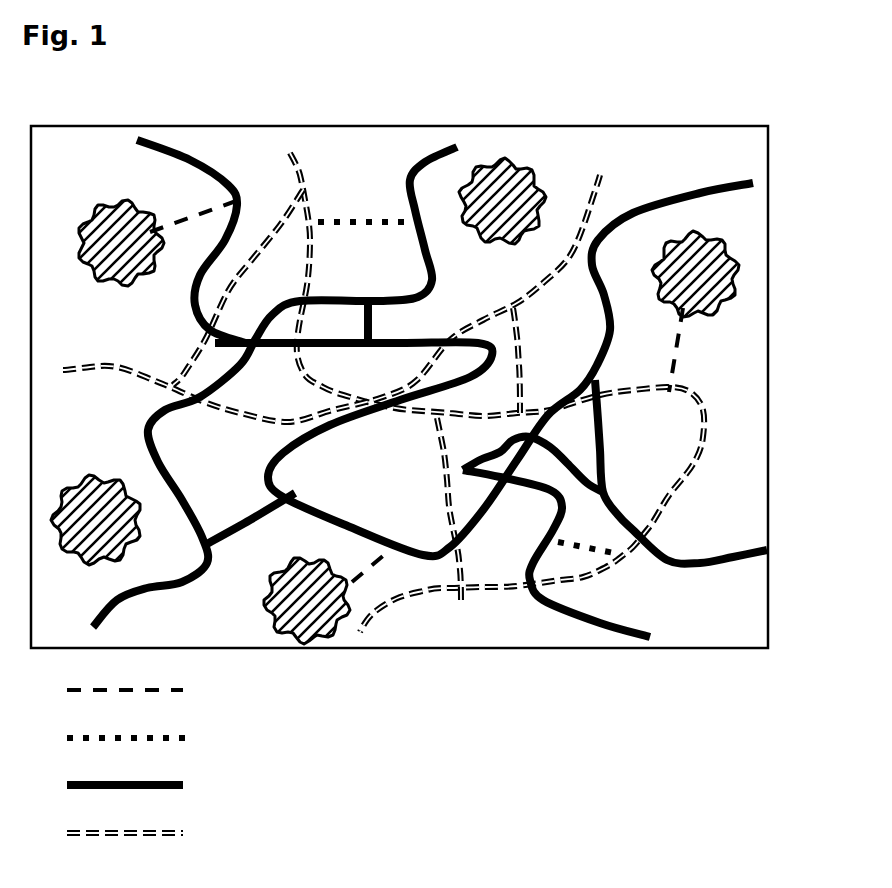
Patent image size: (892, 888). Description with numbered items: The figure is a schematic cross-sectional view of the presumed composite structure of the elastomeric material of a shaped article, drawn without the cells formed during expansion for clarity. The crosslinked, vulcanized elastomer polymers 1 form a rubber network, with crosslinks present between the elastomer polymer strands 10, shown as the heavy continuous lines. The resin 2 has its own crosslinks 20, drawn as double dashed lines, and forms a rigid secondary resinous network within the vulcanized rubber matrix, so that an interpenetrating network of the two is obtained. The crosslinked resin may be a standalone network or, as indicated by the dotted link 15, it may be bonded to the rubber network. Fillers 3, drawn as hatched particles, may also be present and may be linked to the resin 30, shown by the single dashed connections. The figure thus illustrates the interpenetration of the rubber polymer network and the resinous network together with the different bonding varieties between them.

The crosslinked elastomer polymers 1 is at (707, 203).
The resin 2 is at (712, 432).
The fillers 3 is at (737, 272).
The elastomer polymer strands 10 is at (605, 457).
The link to the rubber network 15 is at (617, 567).
The crosslinks of the resin 20 is at (455, 568).
The link of filler to resin 30 is at (680, 350).